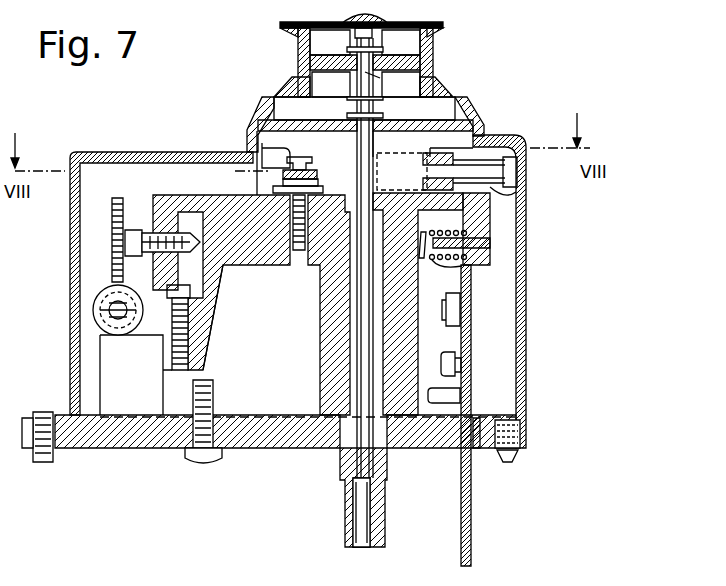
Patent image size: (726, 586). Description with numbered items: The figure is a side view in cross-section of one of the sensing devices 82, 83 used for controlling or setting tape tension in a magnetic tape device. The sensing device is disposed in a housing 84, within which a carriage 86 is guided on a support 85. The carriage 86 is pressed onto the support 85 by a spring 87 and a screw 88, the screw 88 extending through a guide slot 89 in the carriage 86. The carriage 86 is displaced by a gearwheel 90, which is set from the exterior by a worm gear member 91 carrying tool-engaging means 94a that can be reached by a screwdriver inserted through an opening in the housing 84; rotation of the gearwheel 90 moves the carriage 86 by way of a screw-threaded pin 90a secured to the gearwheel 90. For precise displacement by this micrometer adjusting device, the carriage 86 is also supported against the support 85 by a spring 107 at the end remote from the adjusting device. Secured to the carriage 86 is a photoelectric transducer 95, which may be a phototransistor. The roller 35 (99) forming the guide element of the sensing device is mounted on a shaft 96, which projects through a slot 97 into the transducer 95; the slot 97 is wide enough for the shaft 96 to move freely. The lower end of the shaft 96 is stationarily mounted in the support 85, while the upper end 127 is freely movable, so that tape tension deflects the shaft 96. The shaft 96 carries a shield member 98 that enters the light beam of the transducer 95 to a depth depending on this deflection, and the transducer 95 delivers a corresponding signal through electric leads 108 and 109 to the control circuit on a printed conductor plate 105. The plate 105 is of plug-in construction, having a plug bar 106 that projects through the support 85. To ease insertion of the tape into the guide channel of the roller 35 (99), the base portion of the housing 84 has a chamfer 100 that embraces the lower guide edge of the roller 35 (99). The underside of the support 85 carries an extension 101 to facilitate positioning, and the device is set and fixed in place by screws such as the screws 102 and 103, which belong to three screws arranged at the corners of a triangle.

The roller 35 is at (324, 66).
The guide roller 99 is at (298, 58).
The chamfer 100 is at (258, 104).
The upper end of shaft 127 is at (400, 78).
The housing 84 is at (96, 152).
The carriage 86 is at (186, 196).
The screw 88 is at (288, 158).
The spring 87 is at (313, 185).
The shield member 98 is at (377, 150).
The photoelectric transducer 95 is at (474, 134).
The slot 97 is at (303, 481).
The electric lead 108 is at (527, 170).
The electric lead 109 is at (527, 195).
The screw-threaded pin 90a is at (150, 246).
The gearwheel 90 is at (115, 264).
The support 85 is at (243, 255).
The guide slot 89 is at (283, 205).
The shaft 96 is at (368, 344).
The spring 107 is at (443, 257).
The tool-engaging means 94a is at (110, 322).
The worm gear member 91 is at (127, 327).
The printed conductor plate 105 is at (462, 338).
The screw 102 is at (56, 462).
The sensing device 82 is at (185, 452).
The sensing device 83 is at (182, 478).
The extension 101 is at (386, 520).
The plug bar 106 is at (472, 527).
The screw 103 is at (507, 460).